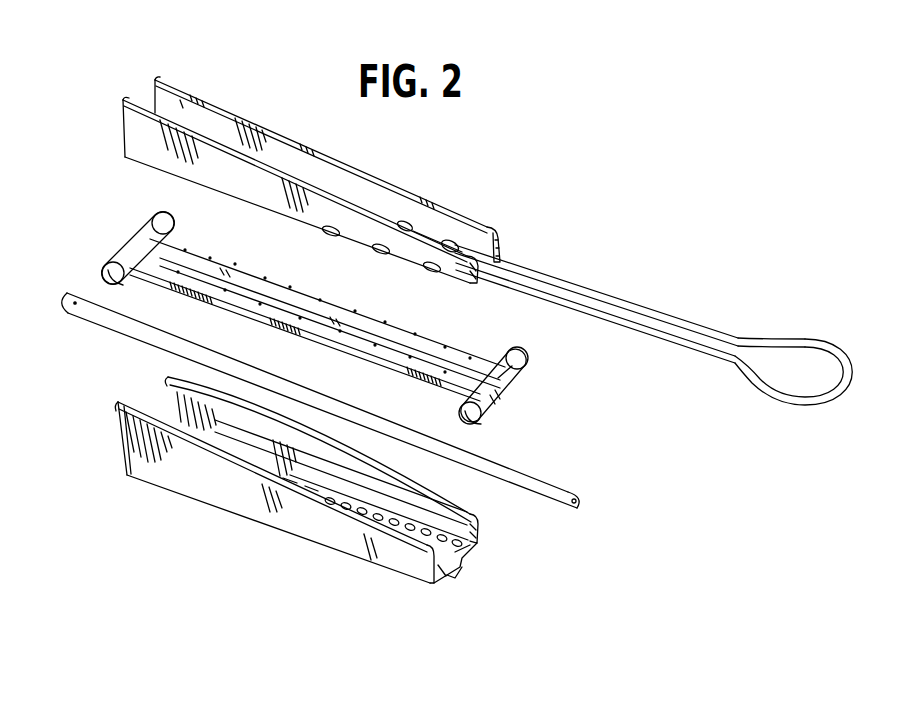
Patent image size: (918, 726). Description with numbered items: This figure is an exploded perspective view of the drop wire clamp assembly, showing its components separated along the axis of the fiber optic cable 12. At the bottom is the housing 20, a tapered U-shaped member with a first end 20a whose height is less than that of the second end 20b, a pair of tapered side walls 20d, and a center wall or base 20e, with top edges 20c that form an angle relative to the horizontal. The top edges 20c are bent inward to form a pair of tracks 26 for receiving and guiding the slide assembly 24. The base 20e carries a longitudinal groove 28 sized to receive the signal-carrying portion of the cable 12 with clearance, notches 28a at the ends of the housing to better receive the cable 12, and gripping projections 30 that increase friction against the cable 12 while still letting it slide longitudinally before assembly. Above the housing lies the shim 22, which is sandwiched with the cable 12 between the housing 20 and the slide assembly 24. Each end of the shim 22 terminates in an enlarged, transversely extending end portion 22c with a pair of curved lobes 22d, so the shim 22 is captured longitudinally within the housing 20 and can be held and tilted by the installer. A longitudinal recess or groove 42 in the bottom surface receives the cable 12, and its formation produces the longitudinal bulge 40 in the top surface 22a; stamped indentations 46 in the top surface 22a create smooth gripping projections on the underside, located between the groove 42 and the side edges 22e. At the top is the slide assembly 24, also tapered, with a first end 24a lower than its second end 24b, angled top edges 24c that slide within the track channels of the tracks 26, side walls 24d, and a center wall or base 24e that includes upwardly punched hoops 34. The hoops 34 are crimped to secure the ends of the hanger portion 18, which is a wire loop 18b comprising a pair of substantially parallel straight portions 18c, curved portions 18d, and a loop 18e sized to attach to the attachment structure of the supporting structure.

The fiber optic cable 12 is at (583, 493).
The hanger portion 18 is at (653, 345).
The wire loop 18b is at (700, 356).
The straight portions 18c is at (541, 281).
The curved portions 18d is at (745, 338).
The loop 18e is at (812, 406).
The housing 20 is at (318, 502).
The first end 20a is at (332, 496).
The second end 20b is at (130, 482).
The top edges 20c is at (276, 495).
The side walls 20d is at (226, 498).
The center wall or base 20e is at (472, 556).
The shim 22 is at (309, 319).
The top surface 22a is at (396, 343).
The end portion 22c is at (132, 237).
The curved lobes 22d is at (158, 225).
The side edges 22e is at (262, 320).
The slide assembly 24 is at (343, 166).
The first end 24a is at (490, 229).
The second end 24b is at (169, 76).
The top edges 24c is at (255, 122).
The side walls 24d is at (200, 102).
The center wall or base 24e is at (479, 280).
The tracks 26 is at (436, 506).
The longitudinal groove 28 is at (446, 574).
The notches 28a is at (457, 567).
The projections 30 is at (472, 546).
The hoops 34 is at (410, 222).
The longitudinal bulge 40 is at (501, 397).
The longitudinal recess or groove 42 is at (510, 381).
The indentations 46 is at (250, 284).